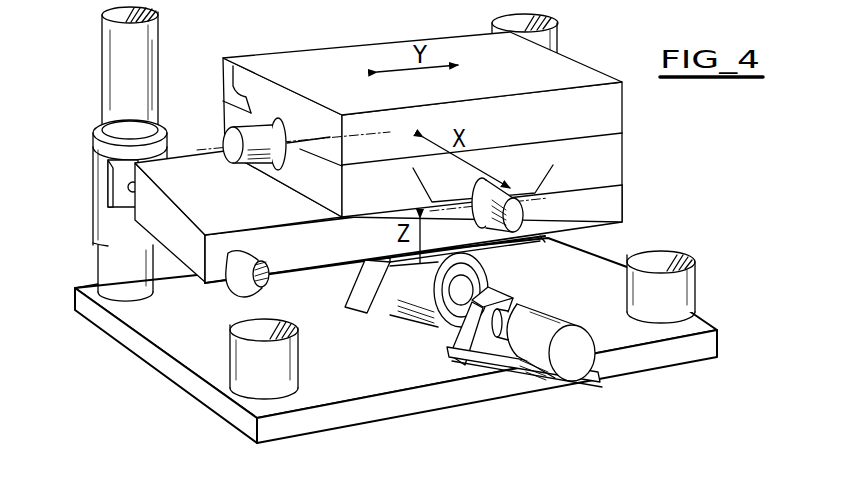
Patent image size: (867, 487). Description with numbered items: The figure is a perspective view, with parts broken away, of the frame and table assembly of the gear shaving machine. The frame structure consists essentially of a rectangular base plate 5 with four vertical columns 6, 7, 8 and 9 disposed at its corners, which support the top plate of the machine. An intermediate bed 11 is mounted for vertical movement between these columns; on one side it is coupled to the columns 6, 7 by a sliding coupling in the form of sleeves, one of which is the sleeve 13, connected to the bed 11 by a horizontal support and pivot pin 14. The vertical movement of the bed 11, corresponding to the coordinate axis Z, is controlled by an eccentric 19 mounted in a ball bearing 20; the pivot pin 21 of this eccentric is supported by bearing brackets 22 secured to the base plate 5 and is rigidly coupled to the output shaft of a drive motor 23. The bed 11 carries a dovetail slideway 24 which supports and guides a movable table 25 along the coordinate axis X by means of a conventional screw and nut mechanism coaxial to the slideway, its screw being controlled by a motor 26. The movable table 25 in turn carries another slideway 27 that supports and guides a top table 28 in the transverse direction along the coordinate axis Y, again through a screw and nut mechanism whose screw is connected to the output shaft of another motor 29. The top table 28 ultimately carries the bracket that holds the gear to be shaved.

The base plate 5 is at (680, 353).
The vertical column 6 is at (240, 357).
The vertical column 7 is at (112, 263).
The vertical column 8 is at (558, 31).
The vertical column 9 is at (683, 292).
The intermediate bed 11 is at (613, 207).
The sleeve 13 is at (100, 152).
The horizontal support and pivot pin 14 is at (237, 283).
The eccentric 19 is at (473, 278).
The ball bearing 20 is at (492, 285).
The pivot pin 21 is at (430, 323).
The bearing bracket 22 is at (460, 340).
The drive motor 23 is at (530, 352).
The dovetail slideway 24 is at (543, 173).
The movable table 25 is at (613, 157).
The motor 26 is at (523, 213).
The slideway 27 is at (233, 60).
The top table 28 is at (318, 67).
The motor 29 is at (248, 168).